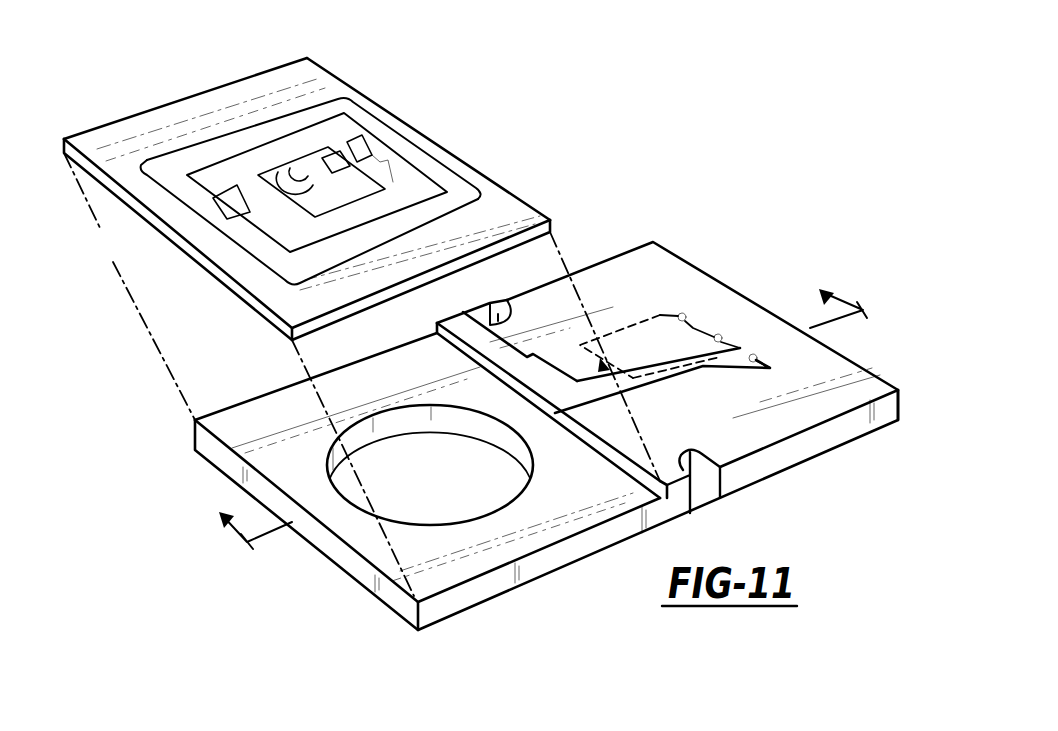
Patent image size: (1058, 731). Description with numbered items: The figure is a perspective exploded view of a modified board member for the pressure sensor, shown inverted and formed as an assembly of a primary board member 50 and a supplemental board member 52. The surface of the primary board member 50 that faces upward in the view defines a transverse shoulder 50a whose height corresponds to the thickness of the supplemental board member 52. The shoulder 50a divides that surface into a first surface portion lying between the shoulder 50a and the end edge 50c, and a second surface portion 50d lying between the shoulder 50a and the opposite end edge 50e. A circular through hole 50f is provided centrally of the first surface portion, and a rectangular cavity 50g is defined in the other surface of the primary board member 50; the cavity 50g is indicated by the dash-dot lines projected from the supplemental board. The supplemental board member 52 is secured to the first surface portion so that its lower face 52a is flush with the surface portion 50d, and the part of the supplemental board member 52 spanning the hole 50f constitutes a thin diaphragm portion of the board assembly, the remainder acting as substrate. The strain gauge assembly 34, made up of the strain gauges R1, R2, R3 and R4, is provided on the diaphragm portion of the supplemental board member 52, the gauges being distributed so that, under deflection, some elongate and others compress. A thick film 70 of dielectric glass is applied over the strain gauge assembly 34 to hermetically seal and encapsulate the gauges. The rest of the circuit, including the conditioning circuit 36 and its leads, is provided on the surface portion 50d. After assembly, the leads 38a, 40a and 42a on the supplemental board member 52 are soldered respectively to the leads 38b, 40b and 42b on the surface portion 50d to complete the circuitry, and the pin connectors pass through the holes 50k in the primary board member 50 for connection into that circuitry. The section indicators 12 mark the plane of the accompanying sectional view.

The section line 12- 12 is at (537, 410).
The strain gauge assembly 34 is at (211, 146).
The conditioning circuit 36 is at (610, 343).
The lead 38a is at (468, 172).
The lead 38b is at (633, 430).
The lead 40a is at (434, 152).
The lead 40b is at (700, 368).
The lead 42a is at (344, 101).
The lead 42b is at (552, 370).
The primary board member 50 is at (705, 262).
The transverse shoulder 50a is at (632, 468).
The end edge 50c is at (360, 568).
The second surface portion 50d is at (677, 298).
The end edge 50e is at (903, 402).
The circular through hole 50f is at (380, 425).
The rectangular cavity 50g is at (172, 174).
The holes 50k is at (754, 354).
The supplemental board member 52 is at (199, 92).
The lower face 52a is at (296, 78).
The thick film 70 is at (272, 258).
The strain gauge R1 is at (231, 215).
The strain gauge R2 is at (294, 193).
The strain gauge R3 is at (341, 175).
The strain gauge R4 is at (386, 163).